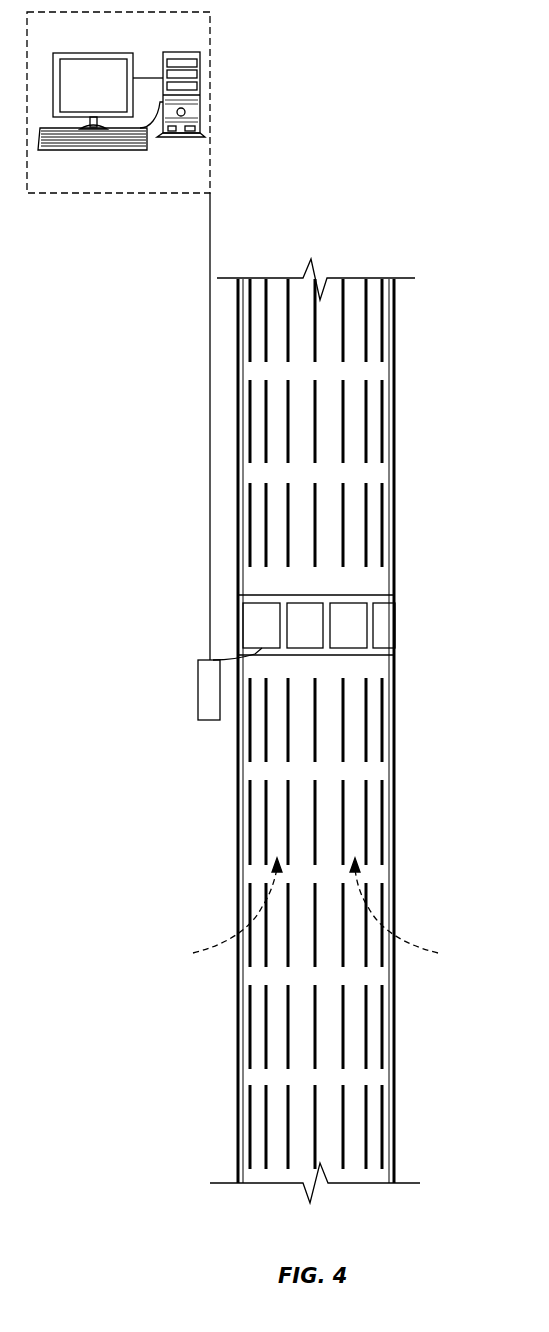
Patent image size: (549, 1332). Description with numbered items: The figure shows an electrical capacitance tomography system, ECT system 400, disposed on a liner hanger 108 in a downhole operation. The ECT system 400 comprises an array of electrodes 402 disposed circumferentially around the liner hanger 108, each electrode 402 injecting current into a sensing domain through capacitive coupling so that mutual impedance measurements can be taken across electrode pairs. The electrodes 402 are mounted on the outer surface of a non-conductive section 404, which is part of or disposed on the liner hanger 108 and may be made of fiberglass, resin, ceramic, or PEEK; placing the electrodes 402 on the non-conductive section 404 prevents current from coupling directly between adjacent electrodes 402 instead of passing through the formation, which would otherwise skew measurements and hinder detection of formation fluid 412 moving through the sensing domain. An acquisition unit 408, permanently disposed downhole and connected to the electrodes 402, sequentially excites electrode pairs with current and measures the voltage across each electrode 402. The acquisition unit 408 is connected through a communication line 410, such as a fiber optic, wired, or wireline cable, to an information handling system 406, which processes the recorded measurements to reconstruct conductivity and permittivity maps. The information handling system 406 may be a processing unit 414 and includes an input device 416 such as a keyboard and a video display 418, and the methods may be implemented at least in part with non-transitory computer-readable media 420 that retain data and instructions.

The ECT system 400 is at (425, 190).
The liner hanger 108 is at (380, 370).
The electrodes 402 is at (348, 625).
The non-conductive section 404 is at (380, 601).
The information handling system 406 is at (222, 100).
The acquisition unit 408 is at (198, 690).
The communication line 410 is at (210, 425).
The formation fluid 412 is at (208, 950).
The processing unit 414 is at (180, 52).
The input device 416 is at (97, 150).
The video display 418 is at (93, 53).
The non-transitory computer-readable media 420 is at (180, 148).